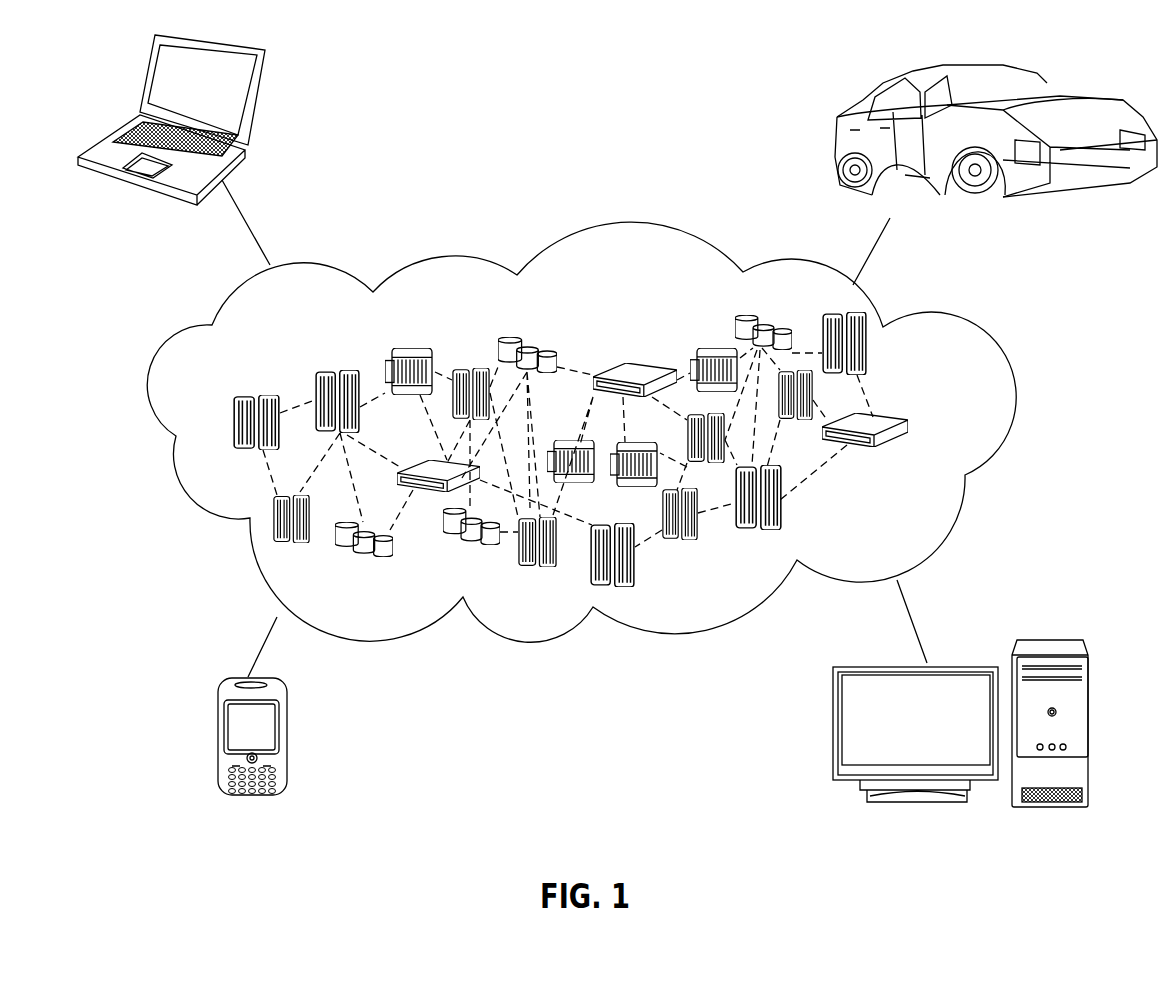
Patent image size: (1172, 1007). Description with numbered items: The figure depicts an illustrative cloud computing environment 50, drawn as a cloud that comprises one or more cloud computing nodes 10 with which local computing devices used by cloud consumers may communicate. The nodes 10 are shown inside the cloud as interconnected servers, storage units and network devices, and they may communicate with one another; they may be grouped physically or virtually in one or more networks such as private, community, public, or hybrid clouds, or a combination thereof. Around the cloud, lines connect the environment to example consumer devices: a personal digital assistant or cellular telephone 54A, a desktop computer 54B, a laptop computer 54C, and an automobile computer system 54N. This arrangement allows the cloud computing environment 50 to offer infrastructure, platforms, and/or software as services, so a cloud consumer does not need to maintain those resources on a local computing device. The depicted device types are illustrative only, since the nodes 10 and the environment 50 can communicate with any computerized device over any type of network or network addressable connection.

The cloud computing node 10 is at (950, 425).
The cloud computing environment 50 is at (972, 340).
The personal digital assistant or cellular telephone 54A is at (218, 740).
The desktop computer 54B is at (1057, 637).
The laptop computer 54C is at (255, 108).
The automobile computer system 54N is at (845, 117).